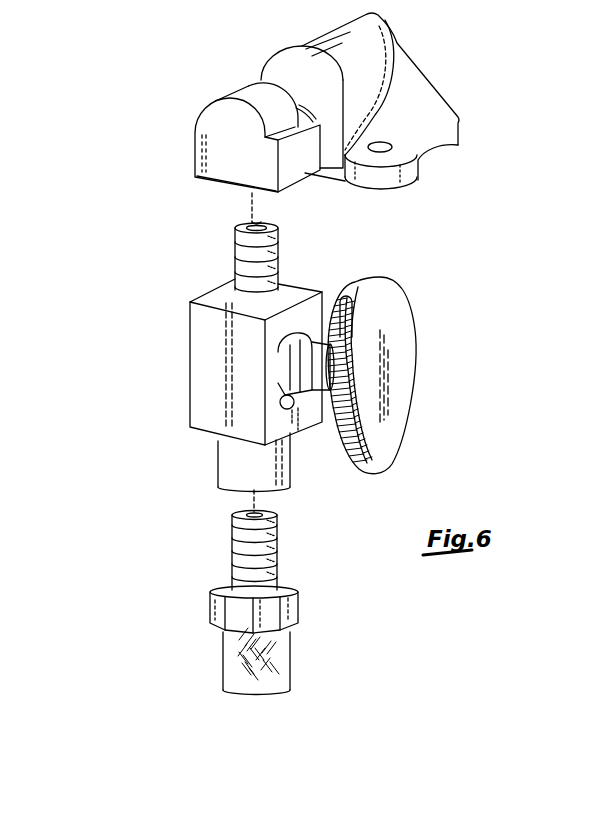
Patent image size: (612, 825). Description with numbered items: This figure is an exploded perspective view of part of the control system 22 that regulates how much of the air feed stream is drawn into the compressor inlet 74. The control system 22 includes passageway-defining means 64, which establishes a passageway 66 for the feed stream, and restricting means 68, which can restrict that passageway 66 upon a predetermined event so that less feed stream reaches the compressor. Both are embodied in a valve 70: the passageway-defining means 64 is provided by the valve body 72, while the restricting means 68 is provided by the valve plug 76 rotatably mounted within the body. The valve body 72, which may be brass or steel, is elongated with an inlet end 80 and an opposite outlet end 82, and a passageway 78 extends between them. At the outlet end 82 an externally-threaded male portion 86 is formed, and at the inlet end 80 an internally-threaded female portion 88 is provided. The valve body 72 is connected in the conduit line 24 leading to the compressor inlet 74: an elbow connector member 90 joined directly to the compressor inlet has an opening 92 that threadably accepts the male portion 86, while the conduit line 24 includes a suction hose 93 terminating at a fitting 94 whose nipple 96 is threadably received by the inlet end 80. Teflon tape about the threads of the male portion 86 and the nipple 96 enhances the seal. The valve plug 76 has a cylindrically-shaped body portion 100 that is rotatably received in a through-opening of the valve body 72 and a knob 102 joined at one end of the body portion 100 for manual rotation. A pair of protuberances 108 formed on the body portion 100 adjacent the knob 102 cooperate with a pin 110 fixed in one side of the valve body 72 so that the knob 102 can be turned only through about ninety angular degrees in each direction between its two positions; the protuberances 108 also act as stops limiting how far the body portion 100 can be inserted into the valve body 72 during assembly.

The control system 22 is at (136, 352).
The conduit line 24 is at (252, 661).
The passageway-defining means 64 is at (241, 348).
The passageway 66 is at (235, 227).
The restricting means 68 is at (410, 375).
The valve 70 is at (208, 330).
The valve body 72 is at (303, 280).
The compressor inlet 74 is at (283, 69).
The valve plug 76 is at (410, 375).
The passageway 78 is at (263, 222).
The inlet end 80 is at (241, 472).
The outlet end 82 is at (259, 243).
The externally-threaded portion 86 is at (273, 245).
The internally-threaded portion 88 is at (278, 470).
The elbow connector member 90 is at (234, 152).
The opening 92 is at (225, 183).
The suction hose 93 is at (237, 643).
The fitting 94 is at (297, 598).
The nipple 96 is at (280, 538).
The body portion 100 is at (335, 347).
The knob 102 is at (388, 435).
The protuberances 108 is at (269, 401).
The pin 110 is at (279, 405).